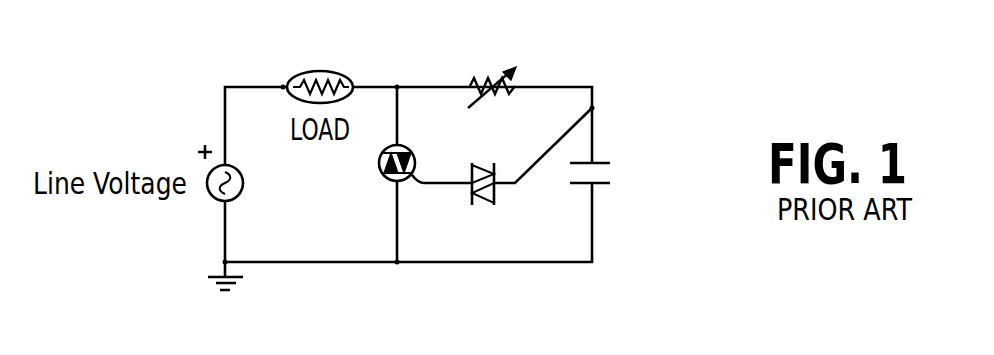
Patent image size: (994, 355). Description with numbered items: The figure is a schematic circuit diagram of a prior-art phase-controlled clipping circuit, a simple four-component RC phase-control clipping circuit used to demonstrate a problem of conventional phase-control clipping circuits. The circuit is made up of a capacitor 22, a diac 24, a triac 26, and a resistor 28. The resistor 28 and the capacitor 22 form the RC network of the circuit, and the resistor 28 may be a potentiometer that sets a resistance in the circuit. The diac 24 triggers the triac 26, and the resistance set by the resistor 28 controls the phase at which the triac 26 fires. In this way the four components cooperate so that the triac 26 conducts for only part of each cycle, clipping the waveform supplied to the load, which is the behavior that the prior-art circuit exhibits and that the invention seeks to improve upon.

The capacitor 22 is at (602, 185).
The diac 24 is at (481, 205).
The triac 26 is at (385, 178).
The resistor 28 is at (518, 80).